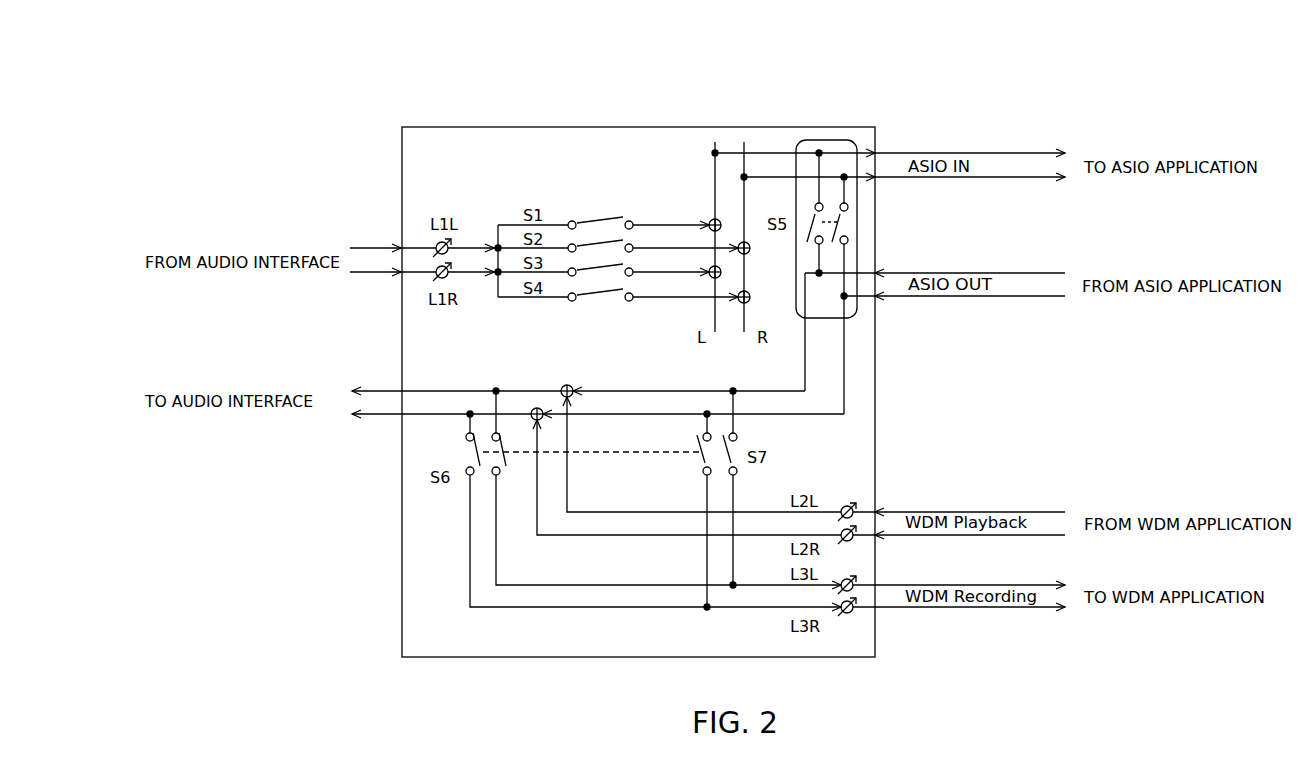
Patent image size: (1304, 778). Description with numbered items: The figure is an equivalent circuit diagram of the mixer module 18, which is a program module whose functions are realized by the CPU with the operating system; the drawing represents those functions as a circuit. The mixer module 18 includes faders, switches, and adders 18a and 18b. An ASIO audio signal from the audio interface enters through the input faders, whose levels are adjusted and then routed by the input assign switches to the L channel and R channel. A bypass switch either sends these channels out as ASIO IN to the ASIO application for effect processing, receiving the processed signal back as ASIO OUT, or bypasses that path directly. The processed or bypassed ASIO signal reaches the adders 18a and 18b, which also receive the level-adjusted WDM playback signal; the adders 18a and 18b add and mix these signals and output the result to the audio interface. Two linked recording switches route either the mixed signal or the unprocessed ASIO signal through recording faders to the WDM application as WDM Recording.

The mixer module 18 is at (635, 127).
The adder 18a is at (570, 385).
The adder 18b is at (537, 408).